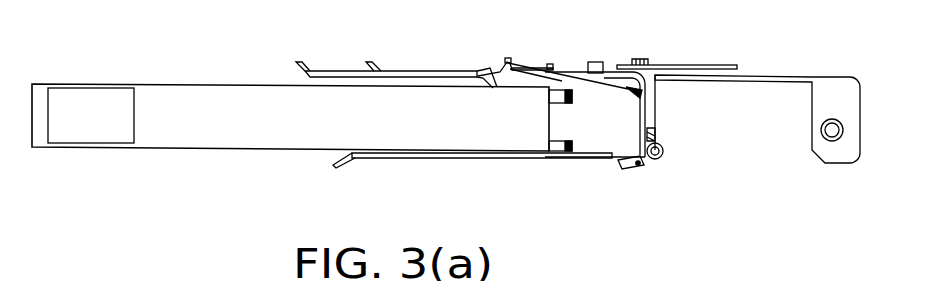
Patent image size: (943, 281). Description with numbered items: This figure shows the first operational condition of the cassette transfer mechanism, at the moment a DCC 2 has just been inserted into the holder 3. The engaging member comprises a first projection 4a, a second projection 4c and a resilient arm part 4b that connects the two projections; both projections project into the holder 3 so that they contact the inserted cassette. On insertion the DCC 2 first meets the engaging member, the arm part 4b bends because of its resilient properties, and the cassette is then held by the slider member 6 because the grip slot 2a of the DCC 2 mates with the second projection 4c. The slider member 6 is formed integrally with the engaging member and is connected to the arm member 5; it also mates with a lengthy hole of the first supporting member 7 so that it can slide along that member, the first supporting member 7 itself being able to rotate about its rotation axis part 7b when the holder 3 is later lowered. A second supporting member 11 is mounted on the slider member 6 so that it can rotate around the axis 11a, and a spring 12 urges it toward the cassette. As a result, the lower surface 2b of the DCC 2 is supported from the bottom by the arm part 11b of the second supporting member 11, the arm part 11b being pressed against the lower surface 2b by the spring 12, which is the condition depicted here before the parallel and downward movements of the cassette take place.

The DCC 2 is at (205, 84).
The grip slot 2a is at (644, 124).
The lower surface 2b is at (646, 130).
The holder 3 is at (406, 70).
The first projection 4a is at (493, 87).
The arm part 4b is at (557, 83).
The second projection 4c is at (632, 96).
The arm member 5 is at (679, 65).
The slider member 6 is at (603, 62).
The first supporting member 7 is at (802, 76).
The rotation axis part 7b is at (825, 141).
The second supporting member 11 is at (641, 167).
The axis 11a is at (666, 147).
The arm part 11b is at (624, 167).
The spring 12 is at (645, 165).